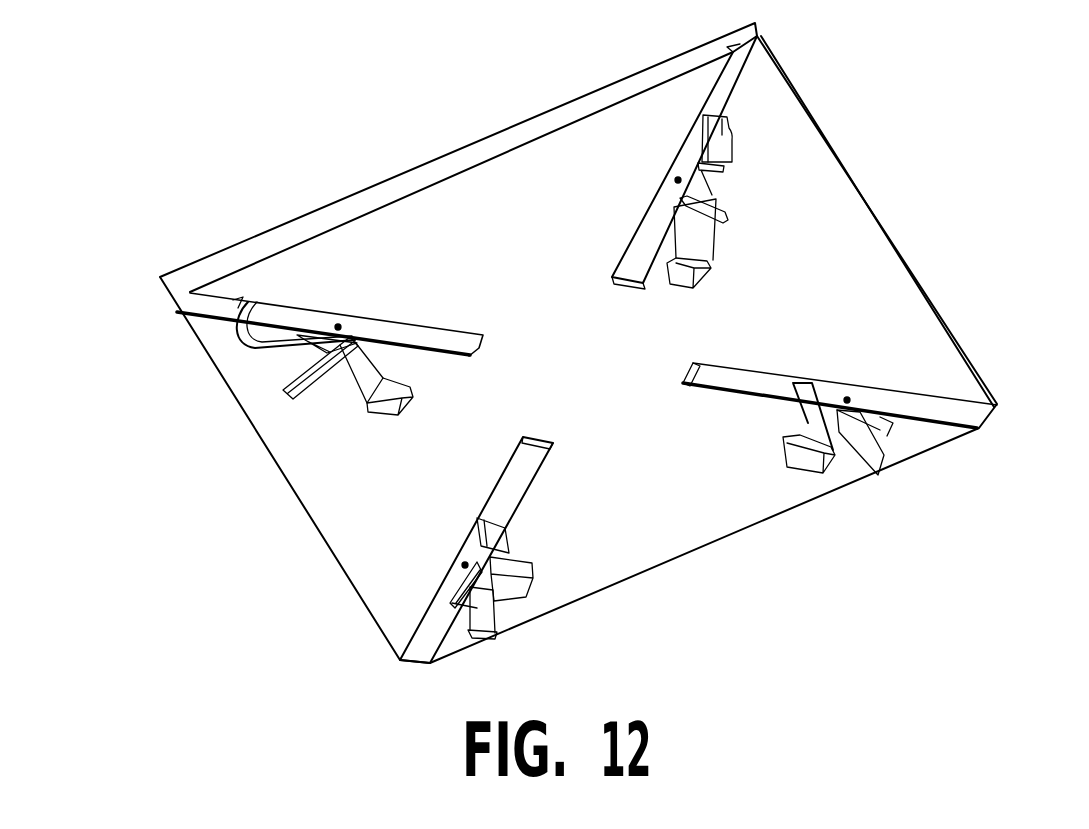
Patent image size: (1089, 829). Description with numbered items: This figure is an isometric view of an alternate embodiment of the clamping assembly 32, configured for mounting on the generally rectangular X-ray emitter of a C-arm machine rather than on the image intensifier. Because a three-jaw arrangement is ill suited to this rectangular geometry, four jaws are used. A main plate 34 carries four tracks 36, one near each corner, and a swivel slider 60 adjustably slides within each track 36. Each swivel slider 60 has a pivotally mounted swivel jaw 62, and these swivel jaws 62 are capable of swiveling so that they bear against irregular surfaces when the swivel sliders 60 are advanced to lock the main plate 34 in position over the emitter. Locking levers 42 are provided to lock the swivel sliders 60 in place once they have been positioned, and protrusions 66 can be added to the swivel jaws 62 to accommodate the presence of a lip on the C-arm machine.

The panel assembly 32 is at (367, 113).
The main plate 34 is at (837, 147).
The track 36 is at (727, 97).
The locking lever 42 is at (287, 393).
The swivel slider 60 is at (870, 393).
The swivel jaw 62 is at (823, 470).
The protrusion 66 is at (403, 400).